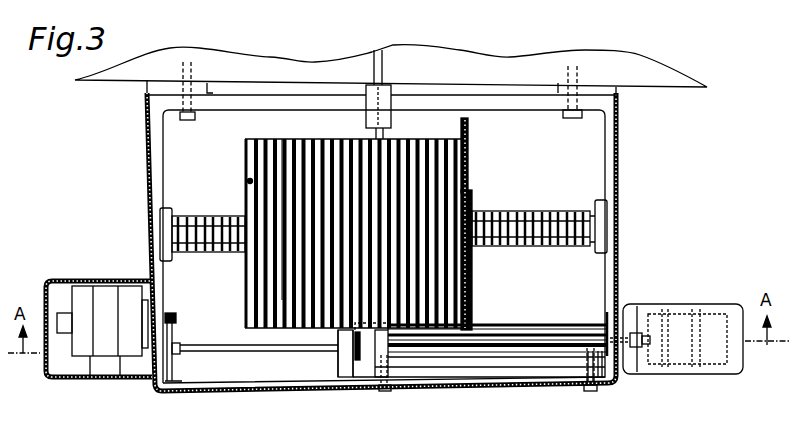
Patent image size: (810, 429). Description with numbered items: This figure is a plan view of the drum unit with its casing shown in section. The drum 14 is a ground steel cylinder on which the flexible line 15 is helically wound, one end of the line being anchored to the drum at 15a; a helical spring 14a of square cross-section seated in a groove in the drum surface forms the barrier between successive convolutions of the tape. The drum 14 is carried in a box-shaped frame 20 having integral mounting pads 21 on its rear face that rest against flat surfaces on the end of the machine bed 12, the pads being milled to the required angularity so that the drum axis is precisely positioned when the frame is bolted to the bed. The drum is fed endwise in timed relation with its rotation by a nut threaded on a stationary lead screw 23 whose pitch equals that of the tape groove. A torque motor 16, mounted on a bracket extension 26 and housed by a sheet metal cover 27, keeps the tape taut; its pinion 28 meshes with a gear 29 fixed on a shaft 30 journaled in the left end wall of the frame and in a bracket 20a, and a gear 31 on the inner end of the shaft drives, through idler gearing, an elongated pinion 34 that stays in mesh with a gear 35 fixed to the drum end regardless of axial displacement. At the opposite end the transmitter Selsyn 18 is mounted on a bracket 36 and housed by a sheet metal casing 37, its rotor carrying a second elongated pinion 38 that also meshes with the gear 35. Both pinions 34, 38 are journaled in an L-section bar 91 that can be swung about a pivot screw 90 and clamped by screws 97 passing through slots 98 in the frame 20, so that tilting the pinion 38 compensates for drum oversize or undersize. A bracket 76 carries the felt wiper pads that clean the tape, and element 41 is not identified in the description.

The machine bed 12 is at (652, 88).
The drum 14 is at (246, 154).
The helical spring 14a is at (283, 139).
The flexible line 15 is at (383, 70).
The anchor point of line 15a is at (250, 181).
The torque motor 16 is at (81, 286).
The transmitter Selsyn 18 is at (705, 313).
The frame 20 is at (158, 180).
The bracket 20a is at (338, 351).
The mounting pads 21 is at (170, 87).
The lead screw 23 is at (523, 212).
The bracket extension 26 is at (112, 370).
The sheet metal cover 27 is at (80, 379).
The pinion 28 is at (176, 318).
The gear 29 is at (179, 357).
The shaft 30 is at (272, 351).
The gear 31 is at (346, 353).
The elongated pinion 34 is at (506, 333).
The gear 35 is at (473, 284).
The bracket 36 is at (628, 313).
The sheet metal casing 37 is at (697, 375).
The elongated pinion 38 is at (547, 334).
The latch 41 is at (371, 350).
The bracket 76 is at (388, 84).
The pivot screw 90 is at (386, 392).
The elongated bar 91 is at (514, 362).
The screws 97 is at (595, 390).
The slots 98 is at (583, 372).